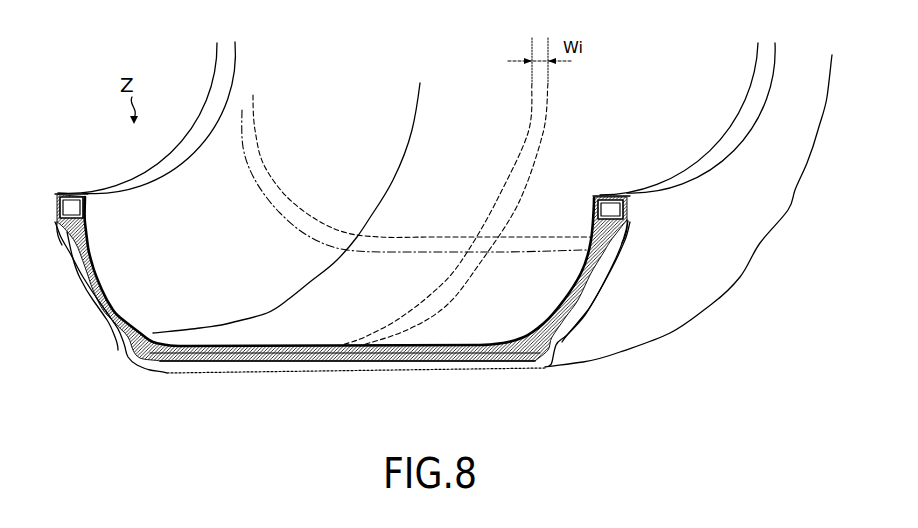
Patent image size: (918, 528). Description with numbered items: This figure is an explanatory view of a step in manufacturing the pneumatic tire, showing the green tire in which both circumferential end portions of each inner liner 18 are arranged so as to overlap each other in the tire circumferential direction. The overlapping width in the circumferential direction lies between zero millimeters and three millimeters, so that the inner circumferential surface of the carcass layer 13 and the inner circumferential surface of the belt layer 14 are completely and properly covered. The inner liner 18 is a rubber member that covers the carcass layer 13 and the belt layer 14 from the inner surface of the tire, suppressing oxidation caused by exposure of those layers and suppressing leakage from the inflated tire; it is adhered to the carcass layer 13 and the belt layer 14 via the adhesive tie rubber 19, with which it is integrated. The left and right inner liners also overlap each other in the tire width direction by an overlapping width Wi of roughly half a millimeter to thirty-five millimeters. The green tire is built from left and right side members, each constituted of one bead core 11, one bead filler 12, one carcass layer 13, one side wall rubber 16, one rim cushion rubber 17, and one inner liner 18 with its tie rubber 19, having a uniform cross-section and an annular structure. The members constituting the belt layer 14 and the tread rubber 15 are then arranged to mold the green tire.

The bead core 11 is at (70, 205).
The bead filler 12 is at (75, 225).
The carcass layer 13 is at (115, 313).
The belt layer 14 is at (300, 361).
The tread rubber 15 is at (508, 373).
The side wall rubber 16 is at (97, 300).
The rim cushion rubber 17 is at (67, 247).
The inner liner 18 is at (267, 320).
The tie rubber 19 is at (405, 214).